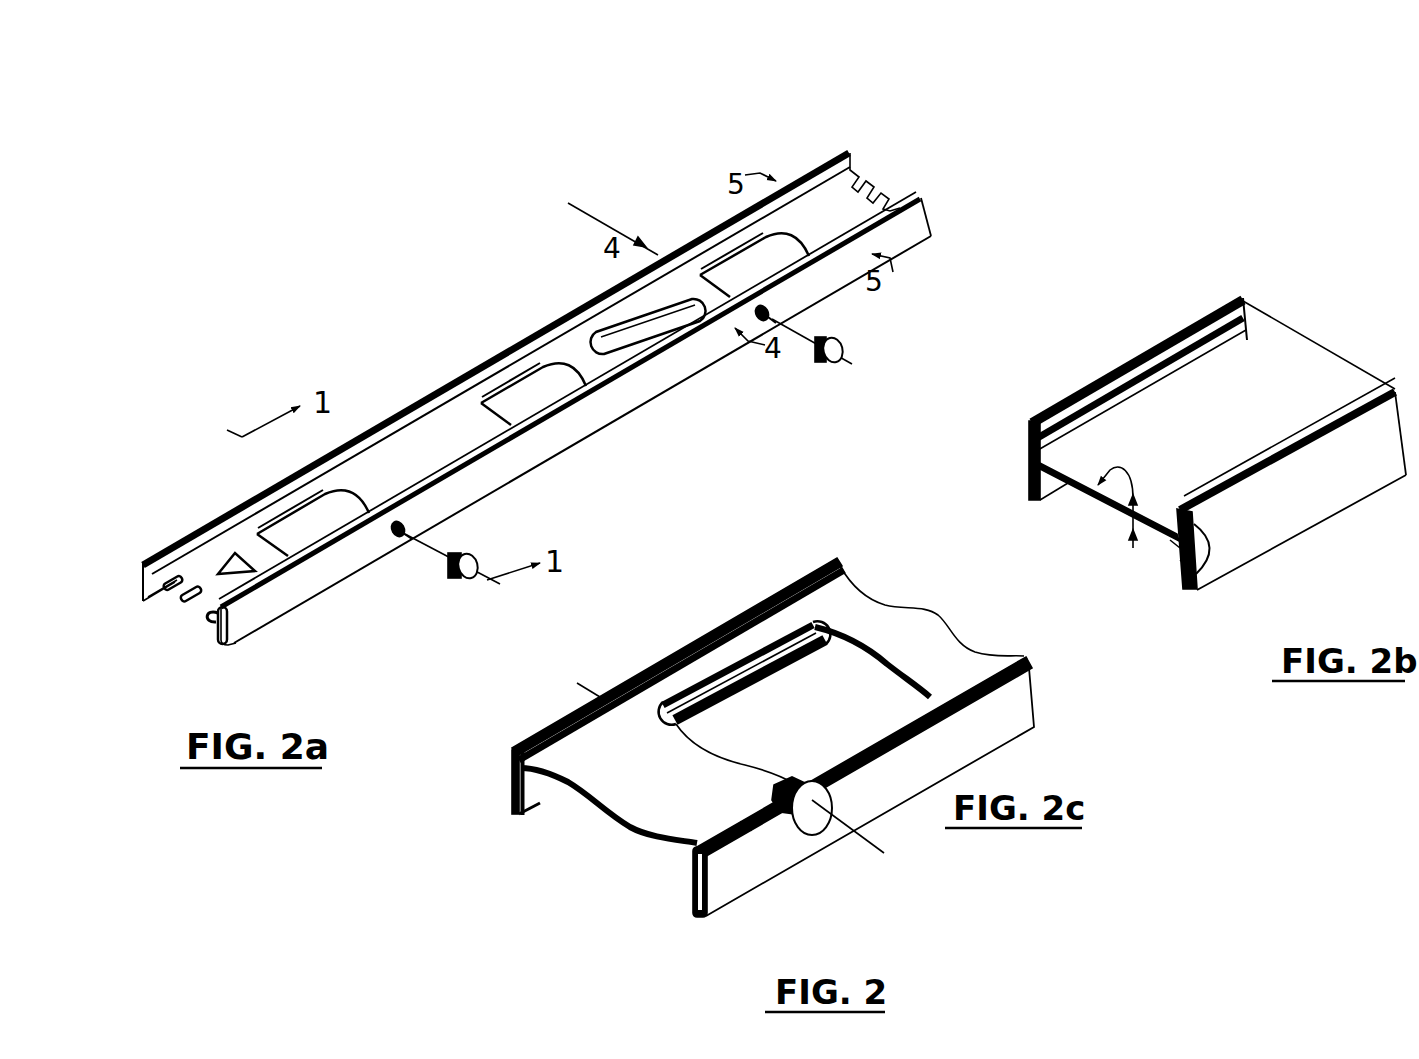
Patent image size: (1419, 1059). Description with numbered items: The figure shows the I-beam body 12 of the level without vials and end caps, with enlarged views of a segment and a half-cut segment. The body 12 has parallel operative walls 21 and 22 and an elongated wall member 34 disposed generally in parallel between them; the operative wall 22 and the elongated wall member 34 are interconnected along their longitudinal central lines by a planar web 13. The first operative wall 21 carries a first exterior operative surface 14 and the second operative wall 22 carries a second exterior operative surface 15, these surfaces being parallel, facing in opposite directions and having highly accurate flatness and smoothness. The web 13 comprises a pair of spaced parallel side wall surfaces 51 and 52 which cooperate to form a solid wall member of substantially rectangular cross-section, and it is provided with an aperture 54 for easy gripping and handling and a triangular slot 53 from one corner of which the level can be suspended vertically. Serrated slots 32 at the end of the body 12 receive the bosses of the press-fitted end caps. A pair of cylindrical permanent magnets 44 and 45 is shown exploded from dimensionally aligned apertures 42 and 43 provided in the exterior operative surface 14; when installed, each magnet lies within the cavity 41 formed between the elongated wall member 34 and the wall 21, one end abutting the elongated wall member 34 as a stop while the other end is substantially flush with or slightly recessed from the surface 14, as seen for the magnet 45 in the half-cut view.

In FIG. 2A, the elongated body member 12 is at (479, 320).
In FIG. 2B, the planar web 13 is at (1273, 383).
In FIG. 2A, the first exterior operative surface 14 is at (624, 403).
In FIG. 2B, the first exterior operative surface 14 is at (1273, 513).
In FIG. 2C, the first exterior operative surface 14 is at (994, 718).
In FIG. 2B, the second exterior operative surface 15 is at (1027, 446).
In FIG. 2C, the second exterior operative surface 15 is at (512, 777).
In FIG. 2B, the first operative wall 21 is at (1184, 588).
In FIG. 2C, the first operative wall 21 is at (733, 820).
In FIG. 2C, the second operative wall 22 is at (717, 627).
In FIG. 2A, the serrated slots 32 is at (178, 600).
In FIG. 2B, the elongated wall member 34 is at (1178, 547).
In FIG. 2C, the elongated wall member 34 is at (703, 817).
In FIG. 2A, the cavity 41 is at (224, 648).
In FIG. 2C, the cavity 41 is at (694, 852).
In FIG. 2A, the aperture 42 is at (396, 539).
In FIG. 2A, the aperture 43 is at (774, 319).
In FIG. 2C, the aperture 43 is at (818, 805).
In FIG. 2A, the cylindrical permanent magnet 44 is at (458, 580).
In FIG. 2B, the cylindrical permanent magnet 44 is at (1182, 563).
In FIG. 2A, the cylindrical permanent magnet 45 is at (822, 365).
In FIG. 2C, the cylindrical permanent magnet 45 is at (803, 826).
In FIG. 2B, the side wall surface 51 is at (1125, 485).
In FIG. 2B, the side wall surface 52 is at (1133, 548).
In FIG. 2A, the triangular slot 53 is at (234, 553).
In FIG. 2A, the aperture 54 is at (645, 326).